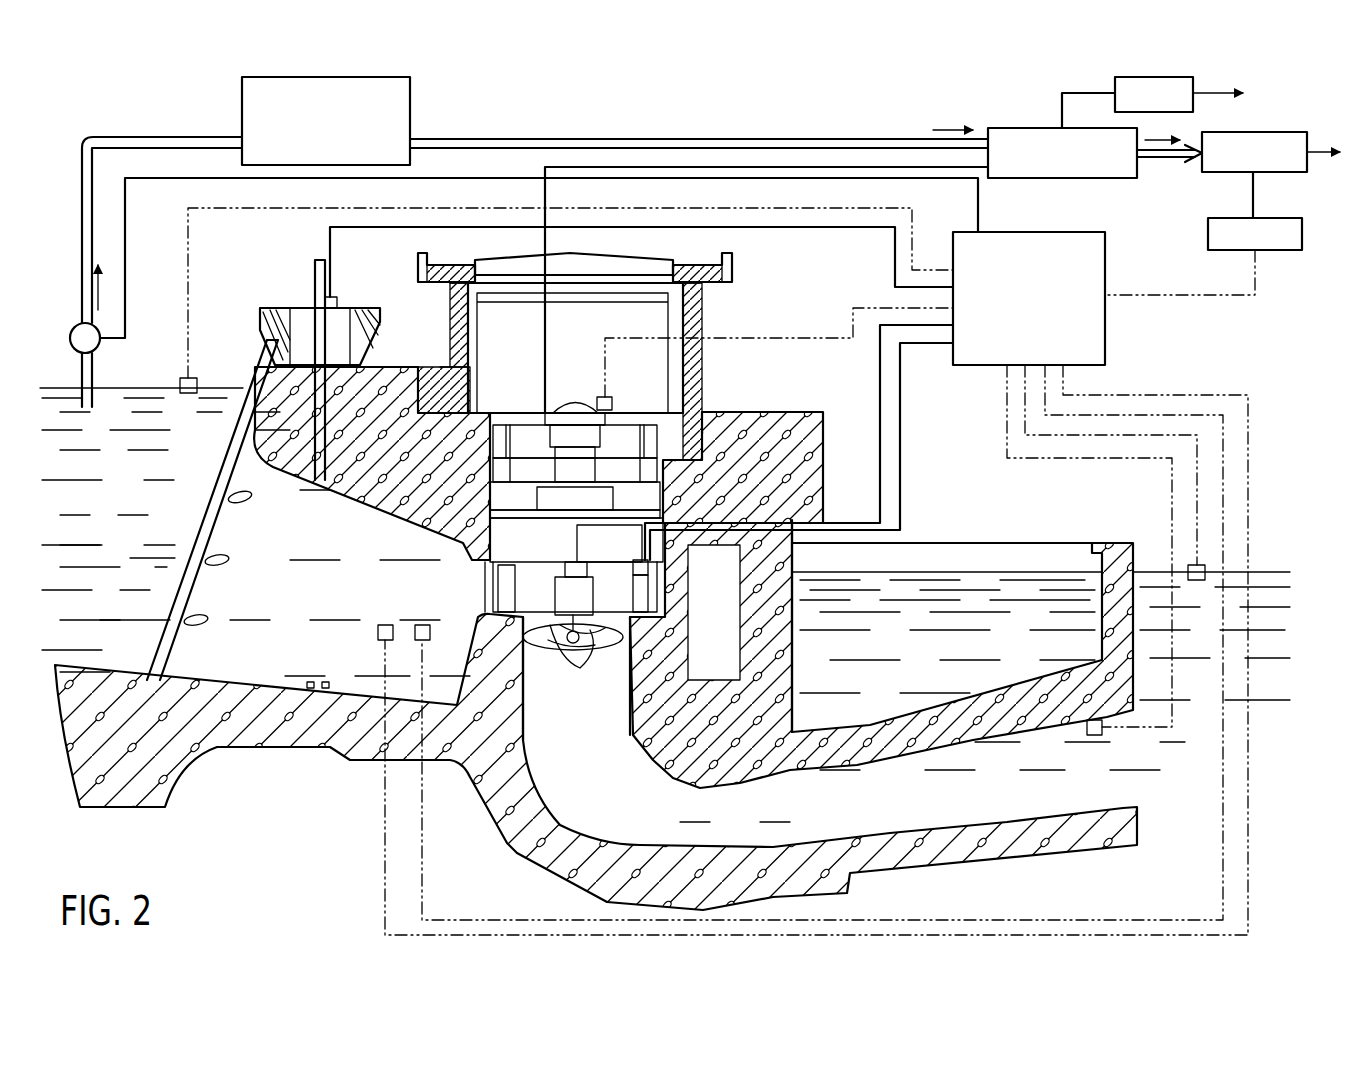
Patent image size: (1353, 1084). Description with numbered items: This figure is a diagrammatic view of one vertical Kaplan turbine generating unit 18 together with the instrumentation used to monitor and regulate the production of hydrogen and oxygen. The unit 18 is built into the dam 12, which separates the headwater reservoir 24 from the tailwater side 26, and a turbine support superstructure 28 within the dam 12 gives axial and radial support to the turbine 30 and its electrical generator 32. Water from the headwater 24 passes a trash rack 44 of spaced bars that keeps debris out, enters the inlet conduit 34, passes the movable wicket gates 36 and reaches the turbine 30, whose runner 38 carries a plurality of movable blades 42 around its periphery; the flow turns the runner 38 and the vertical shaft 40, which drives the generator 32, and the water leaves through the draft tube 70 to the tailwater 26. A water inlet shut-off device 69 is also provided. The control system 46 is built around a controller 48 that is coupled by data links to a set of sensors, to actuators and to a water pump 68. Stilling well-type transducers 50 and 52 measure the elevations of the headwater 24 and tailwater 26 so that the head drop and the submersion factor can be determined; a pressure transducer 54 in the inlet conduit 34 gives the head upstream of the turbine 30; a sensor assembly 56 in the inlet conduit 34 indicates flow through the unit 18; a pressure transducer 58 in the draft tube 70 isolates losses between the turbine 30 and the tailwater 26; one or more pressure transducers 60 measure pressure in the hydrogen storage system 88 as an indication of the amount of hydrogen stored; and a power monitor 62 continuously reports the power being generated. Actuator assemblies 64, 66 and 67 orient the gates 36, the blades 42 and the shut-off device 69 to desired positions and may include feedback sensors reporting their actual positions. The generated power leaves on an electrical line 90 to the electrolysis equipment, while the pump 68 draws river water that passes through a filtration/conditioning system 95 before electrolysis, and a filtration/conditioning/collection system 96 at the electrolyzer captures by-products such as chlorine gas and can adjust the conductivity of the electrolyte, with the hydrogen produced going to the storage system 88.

The dam 12 is at (793, 420).
The turbine generating unit 18 is at (295, 862).
The headwater reservoir 24 is at (108, 497).
The tailwater side 26 is at (1211, 734).
The turbine support superstructure 28 is at (530, 400).
The turbine 30 is at (595, 700).
The electrical generator 32 is at (575, 398).
The inlet conduit 34 is at (380, 552).
The movable wicket gates 36 is at (498, 590).
The runner 38 is at (578, 680).
The vertical shaft 40 is at (588, 590).
The movable blades 42 is at (567, 660).
The trash rack 44 is at (246, 492).
The control system 46 is at (1147, 375).
The controller 48 is at (1046, 318).
The stilling well-type transducer 50 is at (182, 380).
The stilling well-type transducer 52 is at (1188, 568).
The pressure transducer 54 is at (385, 625).
The flow sensor assembly 56 is at (422, 625).
The pressure transducer 58 is at (1087, 727).
The pressure transducer 60 is at (1262, 250).
The power monitor 62 is at (612, 403).
The actuator assembly 64 is at (648, 570).
The actuator assembly 66 is at (575, 565).
The actuator assembly 67 is at (337, 302).
The water pump 68 is at (98, 350).
The water inlet shut-off device 69 is at (315, 292).
The draft tube 70 is at (908, 817).
The storage system 88 is at (1290, 172).
The electrical line 90 is at (548, 340).
The filtration/conditioning system 95 is at (412, 128).
The filtration/conditioning/collection system 96 is at (1193, 108).